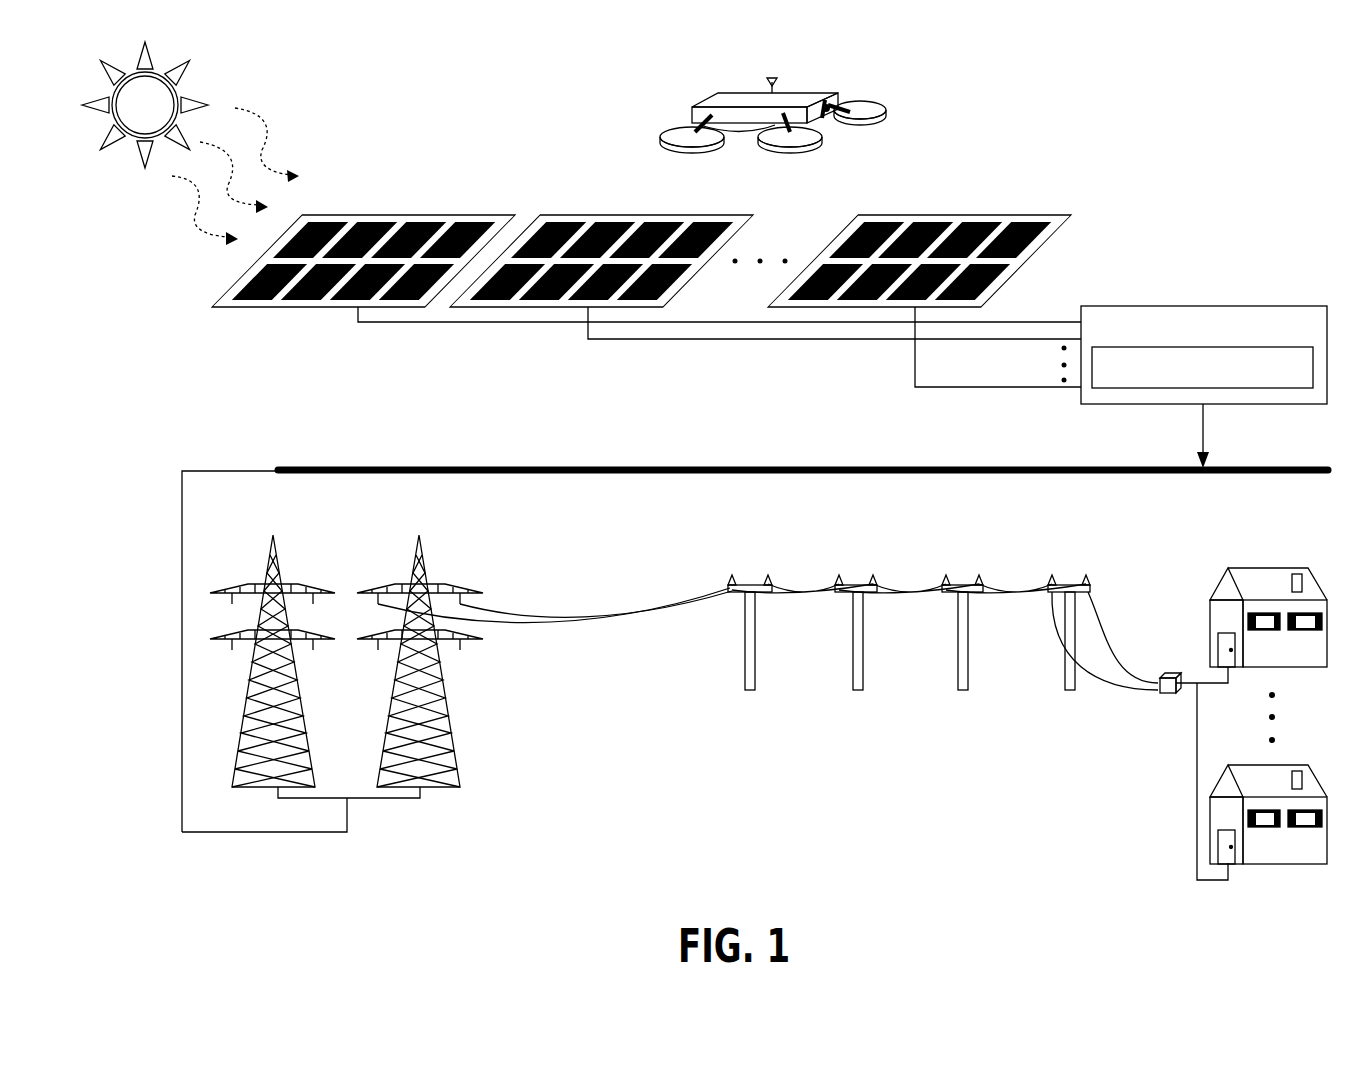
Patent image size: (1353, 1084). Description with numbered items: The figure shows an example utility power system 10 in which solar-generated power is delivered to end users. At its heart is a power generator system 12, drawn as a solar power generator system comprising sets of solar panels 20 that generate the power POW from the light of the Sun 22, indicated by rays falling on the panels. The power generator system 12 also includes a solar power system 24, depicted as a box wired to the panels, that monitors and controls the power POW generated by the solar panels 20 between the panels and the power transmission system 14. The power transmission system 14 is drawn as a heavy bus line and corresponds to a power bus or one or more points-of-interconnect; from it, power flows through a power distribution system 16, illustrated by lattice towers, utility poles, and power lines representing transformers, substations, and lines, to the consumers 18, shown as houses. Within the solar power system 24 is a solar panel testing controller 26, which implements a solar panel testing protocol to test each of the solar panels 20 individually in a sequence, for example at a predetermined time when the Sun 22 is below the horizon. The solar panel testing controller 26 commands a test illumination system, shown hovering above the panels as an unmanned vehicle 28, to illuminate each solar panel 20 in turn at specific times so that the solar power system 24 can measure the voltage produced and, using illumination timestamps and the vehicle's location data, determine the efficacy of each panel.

The utility power system 10 is at (1252, 100).
The power generator system 12 is at (500, 355).
The power transmission system 14 is at (845, 468).
The power distribution system 16 is at (520, 752).
The consumers 18 is at (1184, 572).
The solar panels 20 is at (457, 214).
The Sun 22 is at (138, 198).
The solar power system 24 is at (1220, 306).
The solar panel testing controller 26 is at (1112, 390).
The unmanned vehicle 28 is at (702, 74).